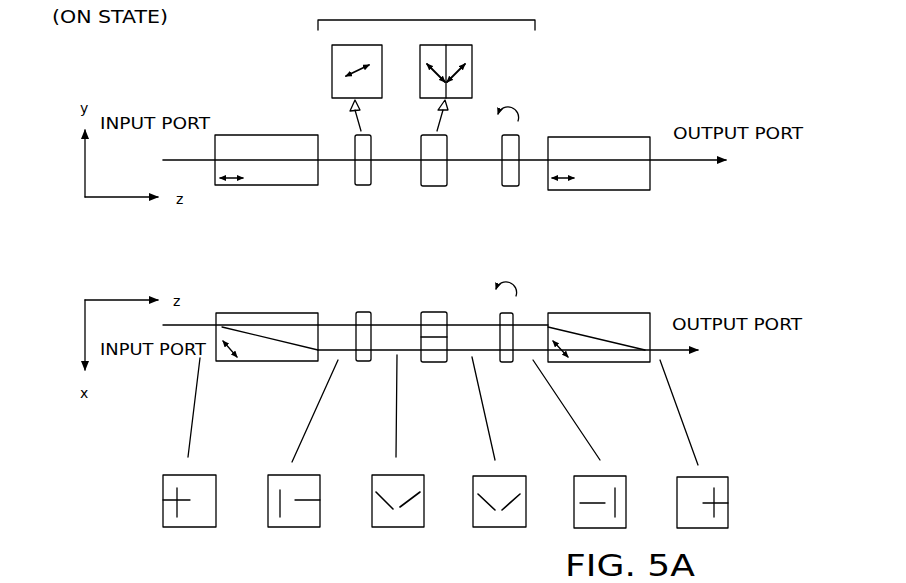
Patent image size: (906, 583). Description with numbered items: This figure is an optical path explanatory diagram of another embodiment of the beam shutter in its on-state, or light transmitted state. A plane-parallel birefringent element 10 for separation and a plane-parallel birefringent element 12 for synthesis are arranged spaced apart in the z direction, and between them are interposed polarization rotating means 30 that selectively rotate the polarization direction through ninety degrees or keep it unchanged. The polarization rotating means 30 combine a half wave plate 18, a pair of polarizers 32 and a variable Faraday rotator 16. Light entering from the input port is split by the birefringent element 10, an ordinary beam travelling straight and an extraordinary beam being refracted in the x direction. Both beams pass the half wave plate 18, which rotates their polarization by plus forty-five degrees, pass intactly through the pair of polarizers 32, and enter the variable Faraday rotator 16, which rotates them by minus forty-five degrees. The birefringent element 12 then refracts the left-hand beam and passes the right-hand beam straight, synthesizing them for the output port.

The plane-parallel birefringent element for separation 10 is at (263, 133).
The plane-parallel birefringent element for synthesis 12 is at (618, 138).
The variable Faraday rotator 16 is at (518, 191).
The ½ wave plate 18 is at (365, 188).
The polarization rotating means 30 is at (426, 67).
The pair of polarizers 32 is at (438, 188).